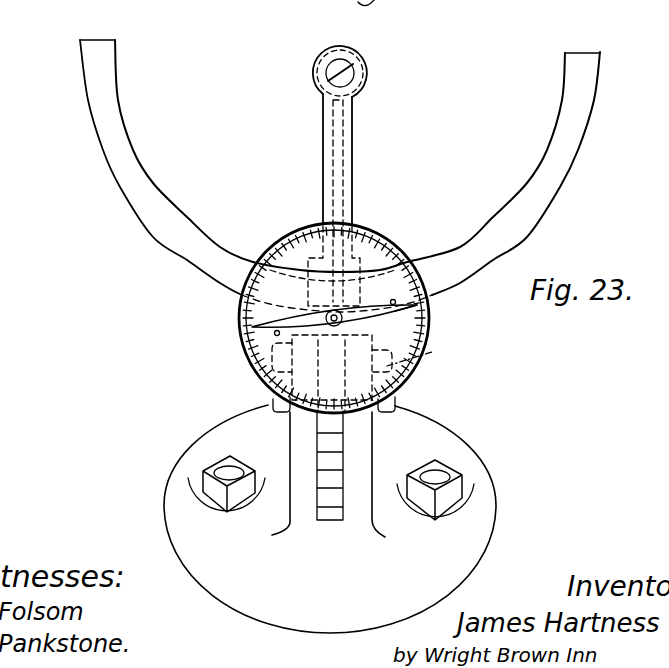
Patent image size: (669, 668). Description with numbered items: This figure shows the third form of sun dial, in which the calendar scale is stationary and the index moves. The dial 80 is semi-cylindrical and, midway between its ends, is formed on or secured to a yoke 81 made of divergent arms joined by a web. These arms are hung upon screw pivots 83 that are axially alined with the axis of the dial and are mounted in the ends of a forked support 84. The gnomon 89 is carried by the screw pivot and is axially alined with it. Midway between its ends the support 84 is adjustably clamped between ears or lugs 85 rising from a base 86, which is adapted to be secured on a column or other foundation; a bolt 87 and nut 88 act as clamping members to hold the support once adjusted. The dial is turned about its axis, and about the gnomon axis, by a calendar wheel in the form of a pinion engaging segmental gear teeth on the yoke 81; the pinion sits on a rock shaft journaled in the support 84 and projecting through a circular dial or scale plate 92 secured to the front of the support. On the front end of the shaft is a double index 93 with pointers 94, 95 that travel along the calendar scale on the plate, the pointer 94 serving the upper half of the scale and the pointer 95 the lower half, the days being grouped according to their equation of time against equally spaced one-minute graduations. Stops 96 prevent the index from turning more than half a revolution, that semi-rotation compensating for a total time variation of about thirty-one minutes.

The dial 80 is at (158, 186).
The yoke 81 is at (338, 182).
The screw pivots 83 is at (330, 68).
The forked support 84 is at (353, 145).
The ears or lugs 85 is at (300, 442).
The base 86 is at (433, 571).
The bolt 87 is at (242, 348).
The nut 88 is at (432, 352).
The gnomon 89 is at (367, 74).
The dial or scale plate 92 is at (393, 245).
The double index 93 is at (336, 326).
The pointer 94 is at (262, 322).
The pointer 95 is at (408, 312).
The stops 96 is at (393, 299).